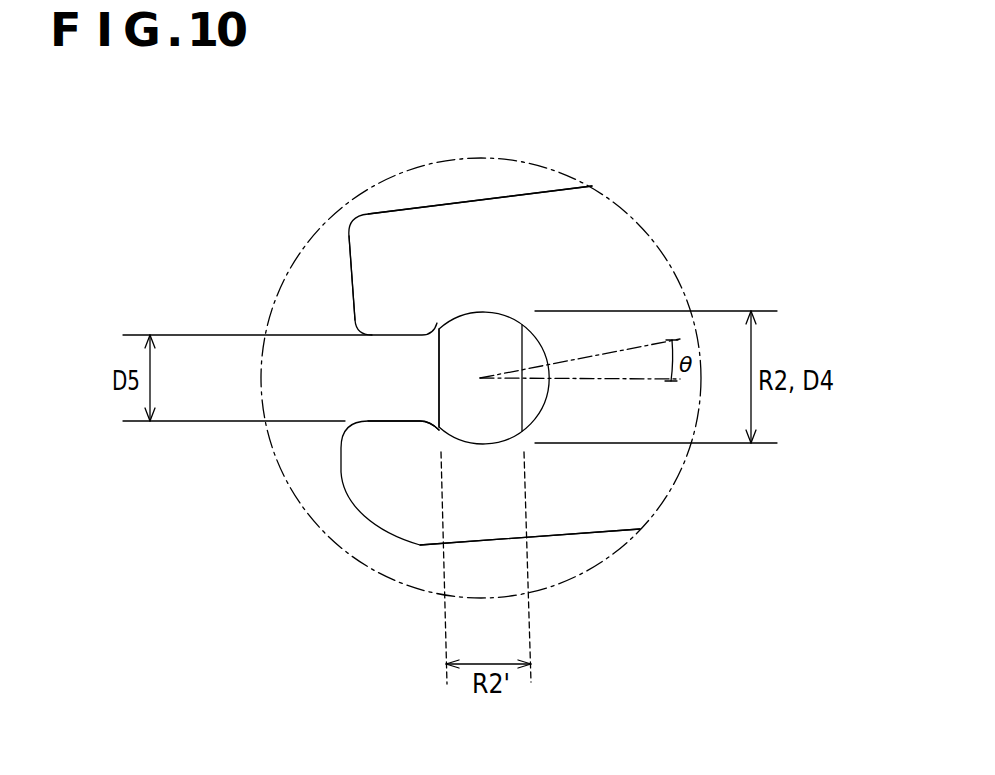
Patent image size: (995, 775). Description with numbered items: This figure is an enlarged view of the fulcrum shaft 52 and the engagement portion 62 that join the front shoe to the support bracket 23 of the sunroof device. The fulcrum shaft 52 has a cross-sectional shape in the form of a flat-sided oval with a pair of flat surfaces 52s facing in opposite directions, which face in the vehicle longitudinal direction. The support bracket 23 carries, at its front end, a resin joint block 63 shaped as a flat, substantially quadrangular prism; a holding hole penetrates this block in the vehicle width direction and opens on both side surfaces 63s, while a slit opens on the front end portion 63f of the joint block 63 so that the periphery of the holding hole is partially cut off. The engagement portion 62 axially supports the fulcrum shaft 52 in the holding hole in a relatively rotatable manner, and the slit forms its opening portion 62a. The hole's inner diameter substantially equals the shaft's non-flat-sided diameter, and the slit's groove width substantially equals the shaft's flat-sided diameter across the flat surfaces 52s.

The support bracket 23 is at (396, 187).
The joint block 63 is at (472, 201).
The front end portion of the joint block 63f is at (350, 272).
The fulcrum shaft 52 is at (482, 310).
The flat surfaces 52s is at (439, 379).
The engagement portion 62 is at (541, 388).
The opening portion 62a is at (392, 420).
The side surfaces of the joint block 63s is at (592, 517).